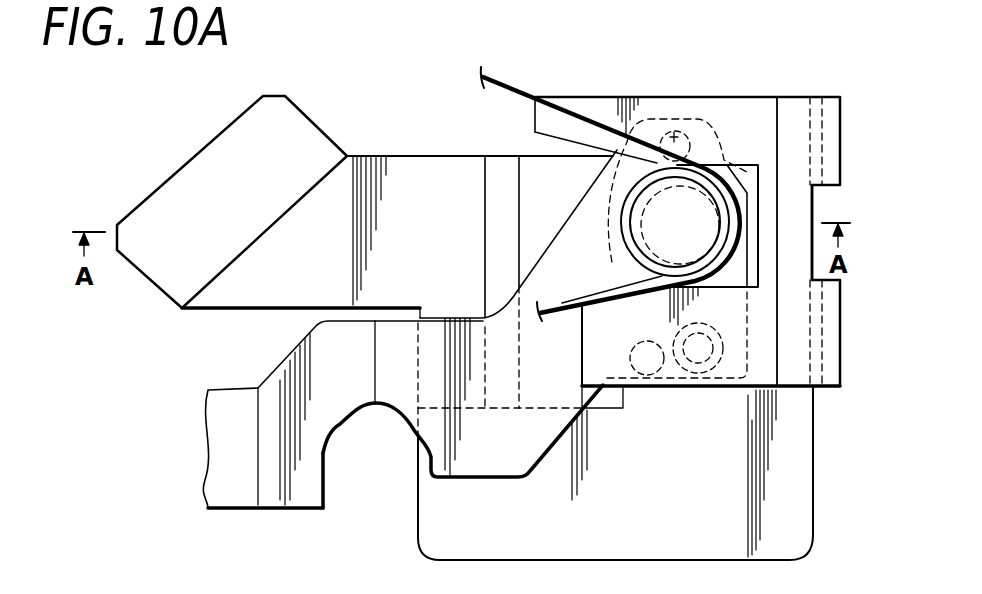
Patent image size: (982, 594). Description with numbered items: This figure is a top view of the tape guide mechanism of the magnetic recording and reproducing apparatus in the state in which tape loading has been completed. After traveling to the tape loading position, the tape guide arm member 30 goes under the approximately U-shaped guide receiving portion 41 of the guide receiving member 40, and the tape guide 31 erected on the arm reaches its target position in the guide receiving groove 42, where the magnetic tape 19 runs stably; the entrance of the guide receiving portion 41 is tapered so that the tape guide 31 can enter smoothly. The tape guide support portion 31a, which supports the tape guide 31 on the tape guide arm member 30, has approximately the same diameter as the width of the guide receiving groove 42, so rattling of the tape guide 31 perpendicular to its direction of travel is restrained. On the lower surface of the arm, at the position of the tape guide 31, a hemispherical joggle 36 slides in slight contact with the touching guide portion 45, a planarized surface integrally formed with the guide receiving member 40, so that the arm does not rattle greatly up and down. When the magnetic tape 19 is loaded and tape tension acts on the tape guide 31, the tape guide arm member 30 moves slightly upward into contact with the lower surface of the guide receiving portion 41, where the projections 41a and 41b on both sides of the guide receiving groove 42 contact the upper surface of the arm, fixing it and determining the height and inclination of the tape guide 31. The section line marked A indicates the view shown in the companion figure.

The magnetic tape 19 is at (503, 80).
The tape guide arm member 30 is at (295, 493).
The tape guide 31 is at (622, 250).
The tape guide support portion 31a is at (633, 267).
The hemispherical joggle 36 is at (700, 373).
The guide receiving member 40 is at (793, 203).
The guide receiving portion 41 is at (603, 97).
The projection 41a is at (672, 131).
The projection 41b is at (645, 372).
The guide receiving groove 42 is at (747, 166).
The touching guide portion 45 is at (398, 170).